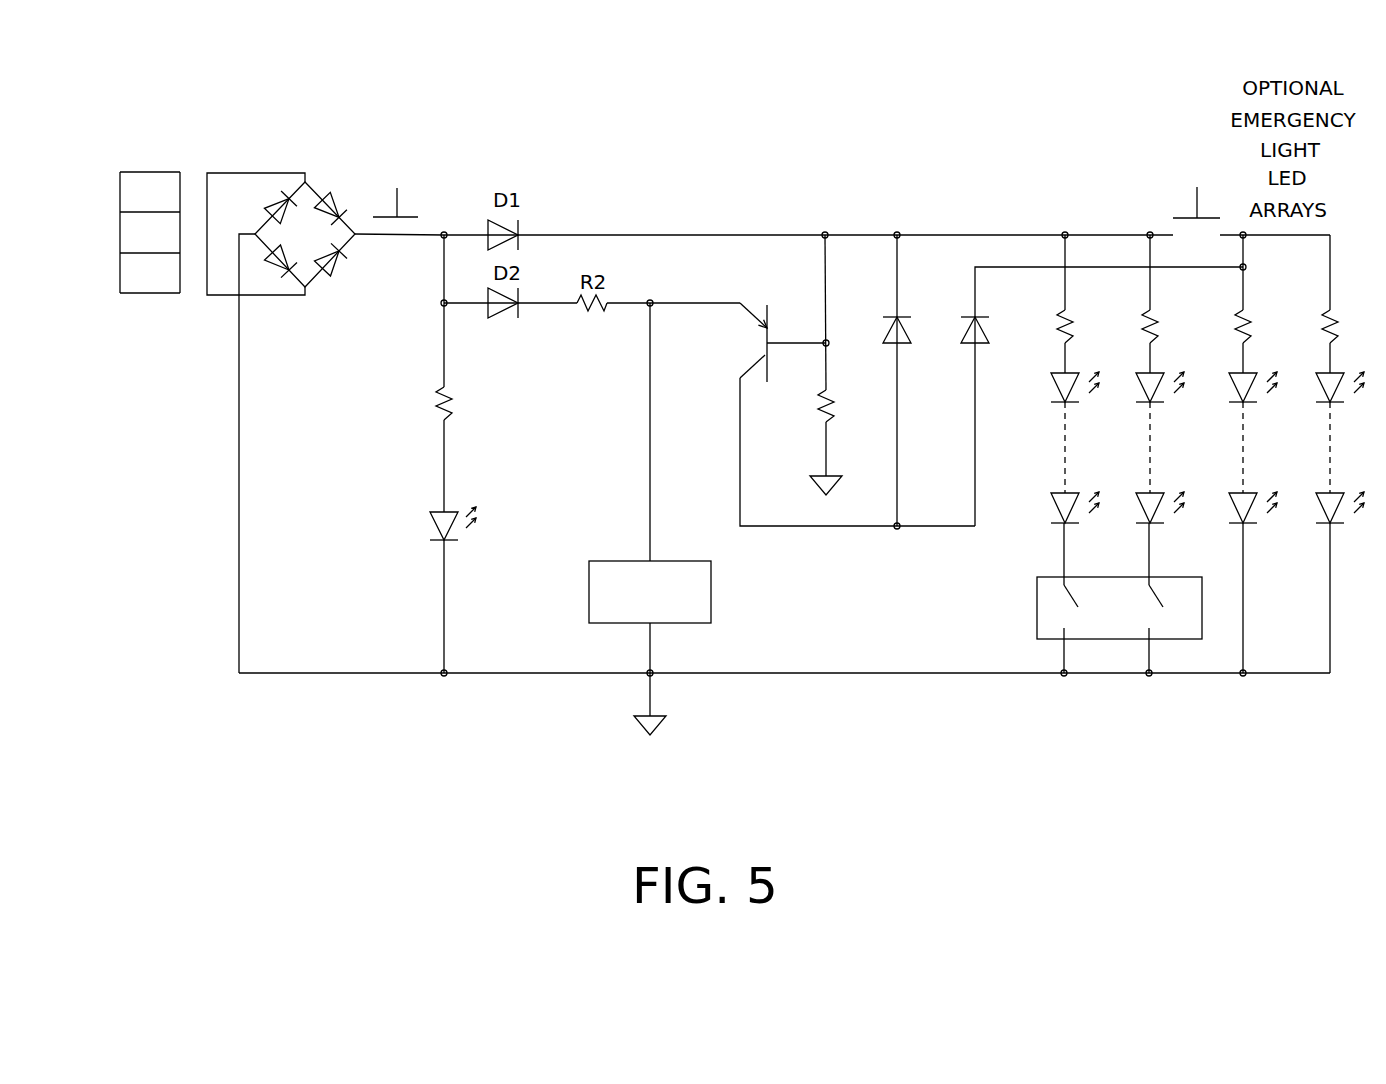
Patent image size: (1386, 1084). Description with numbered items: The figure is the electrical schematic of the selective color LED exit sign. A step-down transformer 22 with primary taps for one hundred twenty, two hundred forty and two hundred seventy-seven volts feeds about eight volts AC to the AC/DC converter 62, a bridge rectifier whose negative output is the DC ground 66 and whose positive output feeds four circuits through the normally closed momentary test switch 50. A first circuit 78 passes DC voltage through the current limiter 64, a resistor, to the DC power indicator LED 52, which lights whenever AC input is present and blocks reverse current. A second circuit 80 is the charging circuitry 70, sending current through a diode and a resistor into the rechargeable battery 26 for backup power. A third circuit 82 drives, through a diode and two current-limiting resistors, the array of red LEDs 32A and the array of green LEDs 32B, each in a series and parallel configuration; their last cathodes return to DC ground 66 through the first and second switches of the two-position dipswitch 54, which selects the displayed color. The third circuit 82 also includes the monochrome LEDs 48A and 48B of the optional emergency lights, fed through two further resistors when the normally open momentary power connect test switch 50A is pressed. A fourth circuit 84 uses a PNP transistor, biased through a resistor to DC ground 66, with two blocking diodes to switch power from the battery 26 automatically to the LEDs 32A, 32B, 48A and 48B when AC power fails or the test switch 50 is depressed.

The step-down transformer 22 is at (119, 261).
The test switch 50 is at (412, 155).
The AC/DC converter 62 is at (325, 423).
The current limiter 64 is at (430, 402).
The first circuit 78 is at (393, 458).
The DC power indicator LED 52 is at (433, 566).
The second circuit 80 is at (900, 350).
The charging circuitry 70 is at (552, 402).
The rechargeable battery 26 is at (703, 608).
The DC ground 66 is at (662, 722).
The fourth circuit 84 is at (857, 477).
The power connect test switch 50A is at (1169, 155).
The third circuit 82 is at (1075, 348).
The red LEDs 32A is at (1045, 398).
The green LEDs 32B is at (1131, 398).
The monochrome LEDs 48A is at (1226, 454).
The monochrome LEDs 48B is at (1311, 454).
The two-position dipswitch 54 is at (1080, 645).